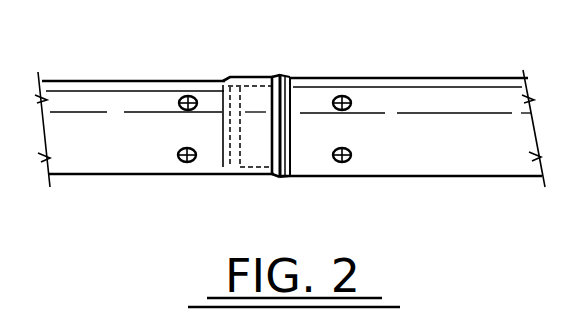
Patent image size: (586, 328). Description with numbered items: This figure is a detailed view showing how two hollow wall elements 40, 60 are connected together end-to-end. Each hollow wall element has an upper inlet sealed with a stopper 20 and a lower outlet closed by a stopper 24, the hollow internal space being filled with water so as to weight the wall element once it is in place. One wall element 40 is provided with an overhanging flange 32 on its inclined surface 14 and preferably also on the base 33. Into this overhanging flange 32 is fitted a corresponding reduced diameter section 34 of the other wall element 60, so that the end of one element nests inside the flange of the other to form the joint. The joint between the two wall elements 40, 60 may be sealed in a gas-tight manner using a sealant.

The inclined surface 14 is at (142, 110).
The stopper 20 is at (343, 100).
The stopper 24 is at (333, 163).
The overhanging flange 32 is at (252, 77).
The base 33 is at (253, 172).
The reduced diameter section 34 is at (282, 78).
The hollow wall element 40 is at (142, 155).
The hollow wall element 60 is at (430, 150).